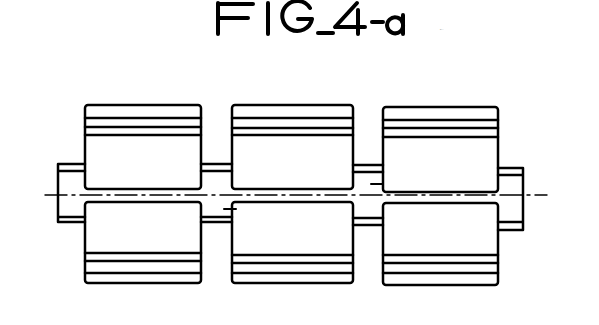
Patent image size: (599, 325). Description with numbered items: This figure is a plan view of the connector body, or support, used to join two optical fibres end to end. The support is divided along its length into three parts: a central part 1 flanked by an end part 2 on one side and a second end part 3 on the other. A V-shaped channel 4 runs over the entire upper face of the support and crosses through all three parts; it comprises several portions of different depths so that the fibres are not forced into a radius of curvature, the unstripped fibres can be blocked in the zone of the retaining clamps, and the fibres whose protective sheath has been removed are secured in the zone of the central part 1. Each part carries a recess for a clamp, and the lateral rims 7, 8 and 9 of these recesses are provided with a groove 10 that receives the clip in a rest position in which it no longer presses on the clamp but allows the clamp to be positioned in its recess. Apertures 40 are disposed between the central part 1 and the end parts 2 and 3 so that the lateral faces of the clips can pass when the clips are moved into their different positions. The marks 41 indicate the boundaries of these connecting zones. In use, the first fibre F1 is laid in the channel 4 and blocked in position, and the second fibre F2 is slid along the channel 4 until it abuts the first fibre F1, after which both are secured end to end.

The central part 1 is at (287, 100).
The end part 2 is at (140, 100).
The second end part 3 is at (445, 99).
The V-shaped channel 4 is at (300, 190).
The lateral rim 7 is at (257, 108).
The lateral rim 8 is at (102, 108).
The lateral rim 9 is at (403, 113).
The groove 10 is at (167, 120).
The aperture 40 is at (215, 122).
The shaft connecting sections / ticks 41 is at (236, 212).
The first fibre F1 is at (170, 195).
The second fibre F2 is at (423, 198).